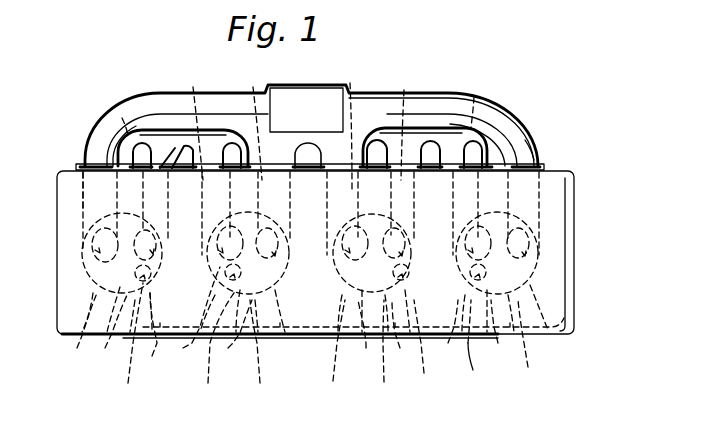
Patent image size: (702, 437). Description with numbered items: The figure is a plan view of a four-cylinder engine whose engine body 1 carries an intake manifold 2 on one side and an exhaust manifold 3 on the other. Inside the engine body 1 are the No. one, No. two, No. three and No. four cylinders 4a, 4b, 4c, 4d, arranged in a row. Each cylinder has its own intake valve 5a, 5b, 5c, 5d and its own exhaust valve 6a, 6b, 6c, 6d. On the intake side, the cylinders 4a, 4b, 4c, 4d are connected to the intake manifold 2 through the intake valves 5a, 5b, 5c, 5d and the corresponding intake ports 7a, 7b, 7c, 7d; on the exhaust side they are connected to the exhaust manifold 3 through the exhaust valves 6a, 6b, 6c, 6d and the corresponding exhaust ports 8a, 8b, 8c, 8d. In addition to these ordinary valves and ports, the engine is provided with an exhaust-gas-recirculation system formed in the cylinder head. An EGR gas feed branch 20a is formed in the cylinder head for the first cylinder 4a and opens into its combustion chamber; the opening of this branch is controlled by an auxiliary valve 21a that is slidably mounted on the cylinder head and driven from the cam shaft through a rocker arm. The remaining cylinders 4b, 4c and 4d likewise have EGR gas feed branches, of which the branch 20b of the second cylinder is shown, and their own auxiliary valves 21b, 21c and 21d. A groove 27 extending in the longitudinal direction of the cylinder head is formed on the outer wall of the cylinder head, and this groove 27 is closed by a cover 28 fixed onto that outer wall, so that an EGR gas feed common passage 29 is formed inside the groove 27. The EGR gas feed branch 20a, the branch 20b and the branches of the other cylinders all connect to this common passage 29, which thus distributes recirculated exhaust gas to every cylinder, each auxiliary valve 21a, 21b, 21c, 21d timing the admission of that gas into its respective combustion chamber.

The engine body 1 is at (566, 256).
The intake manifold 2 is at (379, 100).
The exhaust manifold 3 is at (414, 143).
The No. 1 cylinder 4a is at (77, 333).
The No. 2 cylinder 4b is at (252, 355).
The No. 3 cylinder 4c is at (329, 354).
The No. 4 cylinder 4d is at (527, 345).
The intake valve 5a is at (90, 250).
The intake valve 5b is at (262, 300).
The intake valve 5c is at (330, 300).
The intake valve 5d is at (538, 300).
The exhaust valve 6a is at (151, 337).
The exhaust valve 6b is at (195, 320).
The exhaust valve 6c is at (403, 336).
The exhaust valve 6d is at (447, 332).
The intake port 7a is at (90, 196).
The intake port 7b is at (245, 121).
The intake port 7c is at (348, 125).
The intake port 7d is at (531, 148).
The exhaust port 8a is at (122, 118).
The exhaust port 8b is at (189, 121).
The exhaust port 8c is at (414, 120).
The exhaust port 8d is at (486, 97).
The EGR gas feed branch 20a is at (128, 347).
The EGR gas feed branch 20b is at (208, 350).
The auxiliary valve 21a is at (111, 333).
The auxiliary valve 21b is at (234, 336).
The auxiliary valve 21c is at (386, 354).
The auxiliary valve 21d is at (501, 332).
The groove 27 is at (360, 337).
The cover 28 is at (476, 347).
The EGR gas feed common passage 29 is at (428, 347).